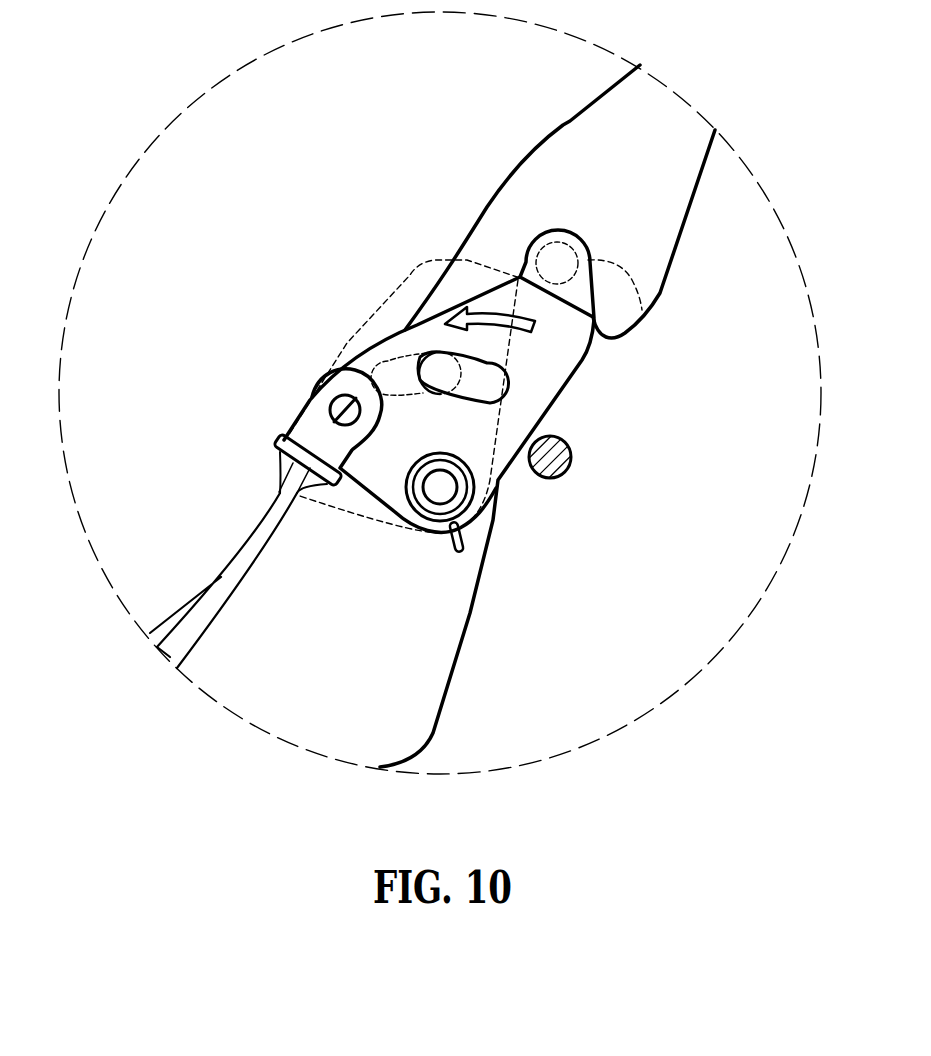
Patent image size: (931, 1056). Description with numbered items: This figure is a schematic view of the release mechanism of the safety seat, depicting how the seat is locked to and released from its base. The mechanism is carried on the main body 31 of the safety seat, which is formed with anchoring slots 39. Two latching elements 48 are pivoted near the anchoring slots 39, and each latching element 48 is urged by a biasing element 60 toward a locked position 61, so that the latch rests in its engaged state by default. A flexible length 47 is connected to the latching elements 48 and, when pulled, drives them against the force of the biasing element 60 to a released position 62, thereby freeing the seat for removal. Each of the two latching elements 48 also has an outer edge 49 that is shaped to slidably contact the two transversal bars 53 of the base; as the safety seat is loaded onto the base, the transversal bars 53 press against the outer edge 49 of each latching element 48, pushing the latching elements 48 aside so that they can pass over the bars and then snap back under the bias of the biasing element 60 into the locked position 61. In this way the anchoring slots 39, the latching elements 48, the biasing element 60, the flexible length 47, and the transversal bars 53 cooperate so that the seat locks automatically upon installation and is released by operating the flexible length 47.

The main body 31 is at (197, 670).
The anchoring slots 39 is at (547, 197).
The flexible length 47 is at (235, 555).
The latching elements 48 is at (377, 477).
The outer edge 49 is at (567, 390).
The transversal bars 53 is at (561, 265).
The biasing element 60 is at (458, 524).
The locked position 61 is at (657, 403).
The released position 62 is at (260, 312).